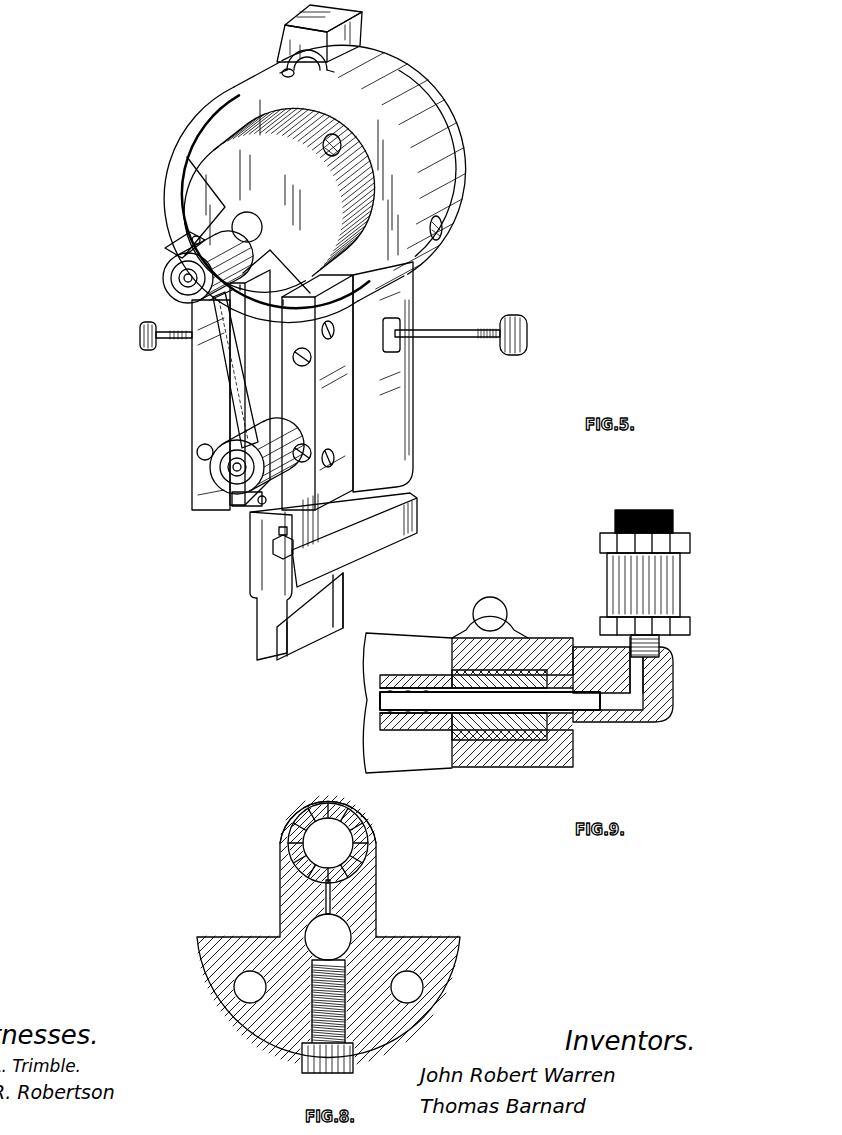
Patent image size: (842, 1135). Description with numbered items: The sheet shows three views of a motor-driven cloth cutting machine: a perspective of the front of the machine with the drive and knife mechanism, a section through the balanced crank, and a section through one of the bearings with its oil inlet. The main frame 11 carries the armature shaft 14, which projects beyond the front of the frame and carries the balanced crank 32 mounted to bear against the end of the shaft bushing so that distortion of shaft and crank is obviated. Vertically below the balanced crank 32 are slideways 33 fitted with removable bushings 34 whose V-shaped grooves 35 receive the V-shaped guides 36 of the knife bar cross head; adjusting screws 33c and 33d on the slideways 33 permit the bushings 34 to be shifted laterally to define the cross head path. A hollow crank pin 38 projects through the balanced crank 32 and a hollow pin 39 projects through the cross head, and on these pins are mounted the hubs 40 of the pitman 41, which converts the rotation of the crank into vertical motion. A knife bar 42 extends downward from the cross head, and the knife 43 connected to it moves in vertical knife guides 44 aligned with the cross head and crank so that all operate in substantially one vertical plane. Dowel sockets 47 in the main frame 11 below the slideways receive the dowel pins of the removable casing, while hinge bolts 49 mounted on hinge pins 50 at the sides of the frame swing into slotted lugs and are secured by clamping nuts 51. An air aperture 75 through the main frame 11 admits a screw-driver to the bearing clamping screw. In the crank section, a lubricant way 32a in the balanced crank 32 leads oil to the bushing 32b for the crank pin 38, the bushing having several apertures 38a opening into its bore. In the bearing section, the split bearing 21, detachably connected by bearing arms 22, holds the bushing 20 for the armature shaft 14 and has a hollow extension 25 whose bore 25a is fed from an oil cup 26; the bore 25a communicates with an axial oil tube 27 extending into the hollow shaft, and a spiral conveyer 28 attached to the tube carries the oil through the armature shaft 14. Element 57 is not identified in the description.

In FIG. 5, the main frame 11 is at (397, 447).
In FIG. 5, the armature shaft 14 is at (222, 222).
In FIG. 9, the armature shaft 14 is at (398, 730).
In FIG. 9, the bushing 20 is at (513, 740).
In FIG. 9, the split bearing 21 is at (507, 627).
In FIG. 9, the bearing arms 22 is at (372, 658).
In FIG. 9, the hollow extension 25 is at (623, 722).
In FIG. 9, the bore 25a is at (585, 700).
In FIG. 9, the oil cup 26 is at (607, 570).
In FIG. 9, the axial oil tube 27 is at (530, 700).
In FIG. 9, the spiral conveyer 28 is at (380, 705).
In FIG. 5, the balanced crank 32 is at (233, 167).
In FIG. 8, the balanced crank 32 is at (287, 927).
In FIG. 8, the lubricant way 32a is at (373, 868).
In FIG. 5, the bushing 32b is at (178, 278).
In FIG. 8, the bushing 32b is at (290, 837).
In FIG. 5, the slideways 33 is at (145, 340).
In FIG. 5, the adjusting screw 33c is at (283, 300).
In FIG. 5, the adjusting screw 33d is at (240, 285).
In FIG. 5, the removable bushings 34 is at (222, 335).
In FIG. 5, the V-shaped grooves 35 is at (190, 306).
In FIG. 5, the V-shaped guides 36 is at (210, 410).
In FIG. 5, the hollow crank pin 38 is at (175, 282).
In FIG. 8, the apertures 38a is at (352, 818).
In FIG. 5, the hollow pin 39 is at (235, 468).
In FIG. 5, the hubs 40 is at (175, 258).
In FIG. 5, the pitman 41 is at (217, 383).
In FIG. 5, the knife bar 42 is at (267, 545).
In FIG. 5, the knife 43 is at (267, 585).
In FIG. 5, the knife guides 44 is at (280, 627).
In FIG. 5, the dowel sockets 47 is at (397, 503).
In FIG. 5, the hinge bolts 49 is at (442, 332).
In FIG. 5, the hinge pins 50 is at (378, 330).
In FIG. 5, the clamping nuts 51 is at (148, 352).
In FIG. 5, the bushing 57 is at (207, 452).
In FIG. 5, the air aperture 75 is at (443, 228).